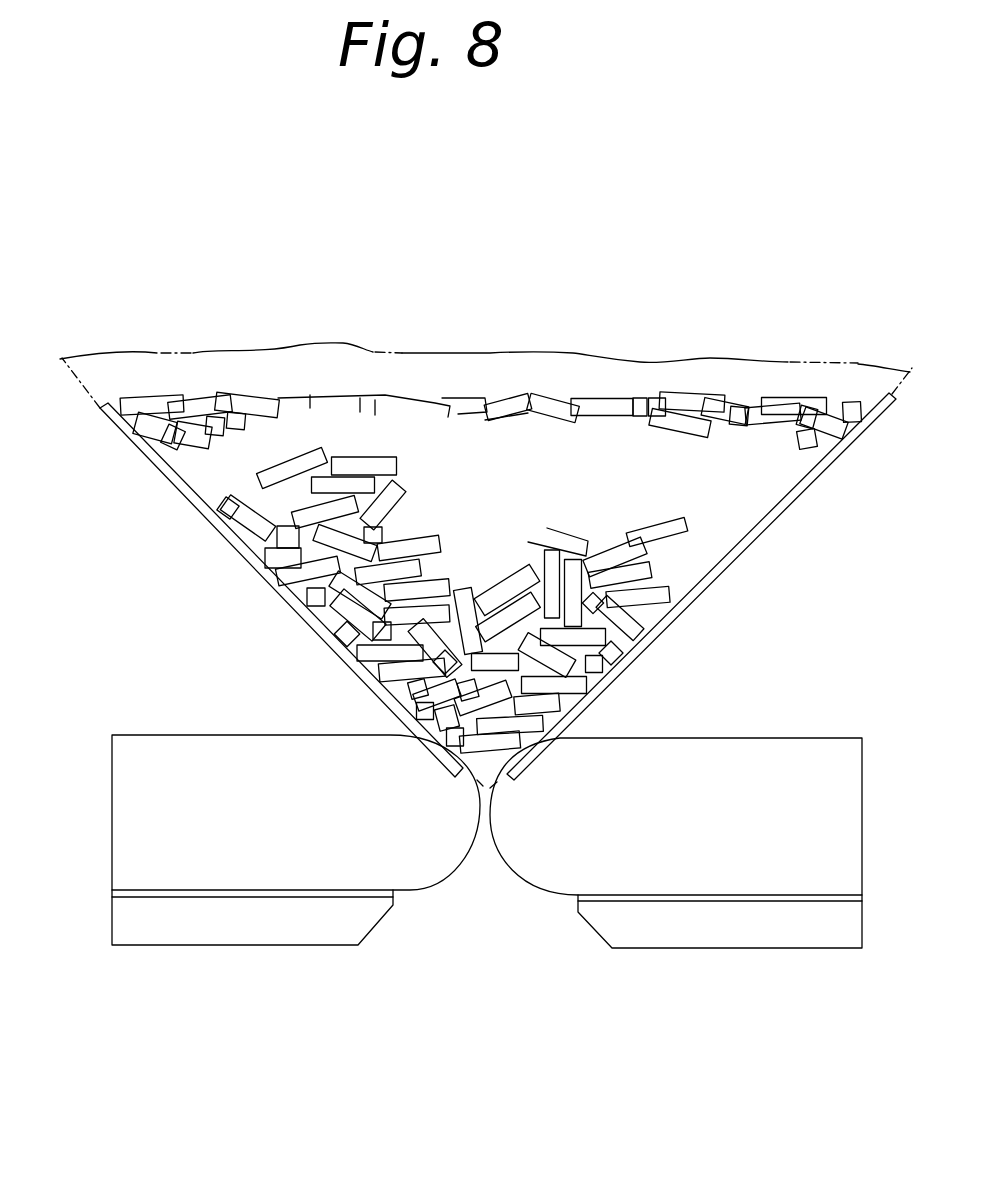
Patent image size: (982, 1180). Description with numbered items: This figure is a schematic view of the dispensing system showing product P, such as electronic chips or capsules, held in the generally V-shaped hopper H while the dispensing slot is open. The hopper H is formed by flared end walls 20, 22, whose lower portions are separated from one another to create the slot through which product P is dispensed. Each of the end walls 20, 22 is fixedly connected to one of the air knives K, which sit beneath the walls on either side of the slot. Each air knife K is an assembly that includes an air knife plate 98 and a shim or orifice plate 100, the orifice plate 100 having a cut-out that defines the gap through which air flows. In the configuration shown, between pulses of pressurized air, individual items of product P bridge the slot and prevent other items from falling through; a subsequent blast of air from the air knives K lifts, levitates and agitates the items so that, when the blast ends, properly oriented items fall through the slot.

The hopper H is at (205, 566).
The product P is at (605, 384).
The end wall 20 is at (281, 598).
The end wall 22 is at (766, 540).
The air knife K is at (253, 728).
The shim or orifice plate 100 is at (184, 893).
The air knife plate 98 is at (757, 927).